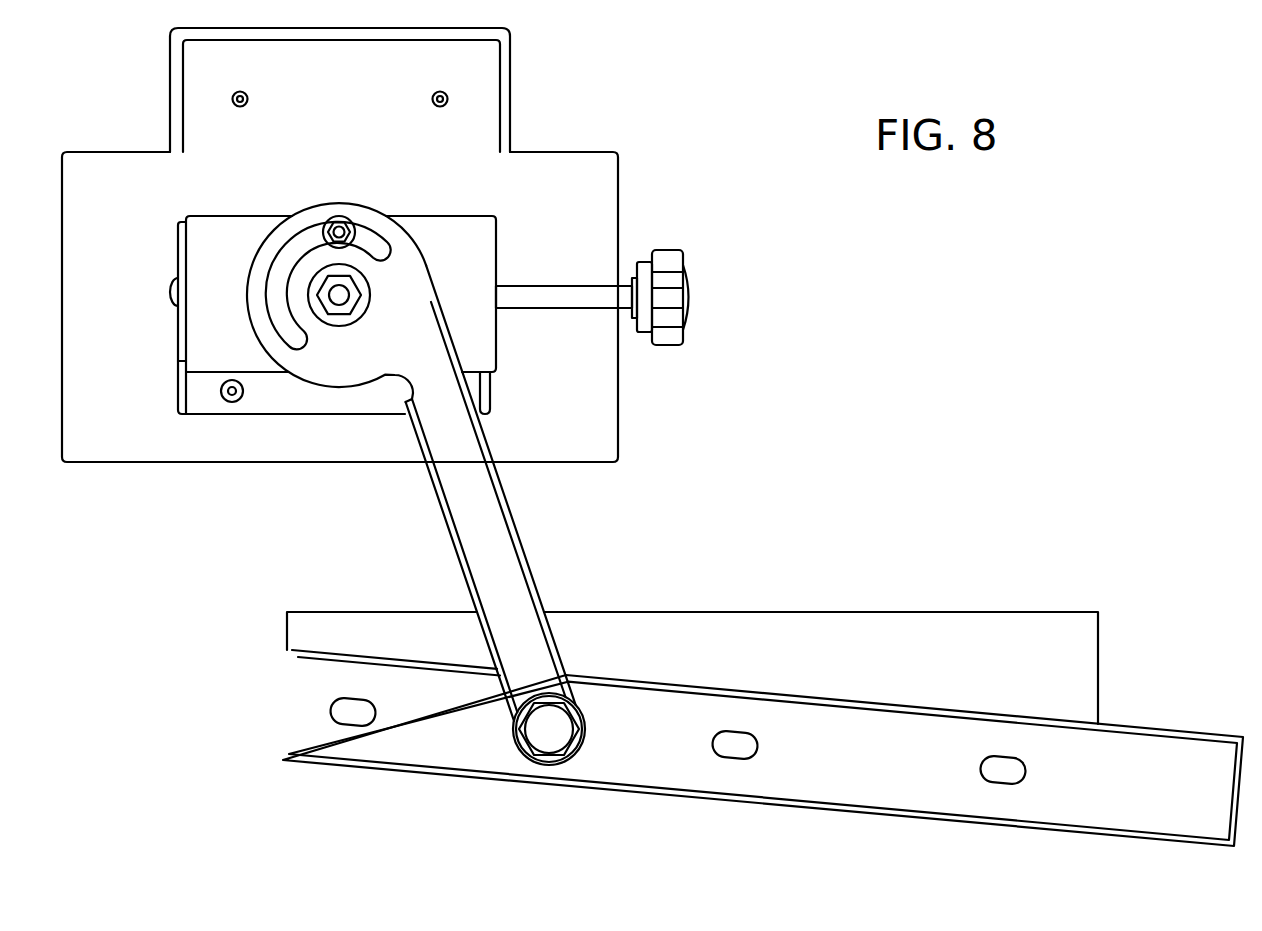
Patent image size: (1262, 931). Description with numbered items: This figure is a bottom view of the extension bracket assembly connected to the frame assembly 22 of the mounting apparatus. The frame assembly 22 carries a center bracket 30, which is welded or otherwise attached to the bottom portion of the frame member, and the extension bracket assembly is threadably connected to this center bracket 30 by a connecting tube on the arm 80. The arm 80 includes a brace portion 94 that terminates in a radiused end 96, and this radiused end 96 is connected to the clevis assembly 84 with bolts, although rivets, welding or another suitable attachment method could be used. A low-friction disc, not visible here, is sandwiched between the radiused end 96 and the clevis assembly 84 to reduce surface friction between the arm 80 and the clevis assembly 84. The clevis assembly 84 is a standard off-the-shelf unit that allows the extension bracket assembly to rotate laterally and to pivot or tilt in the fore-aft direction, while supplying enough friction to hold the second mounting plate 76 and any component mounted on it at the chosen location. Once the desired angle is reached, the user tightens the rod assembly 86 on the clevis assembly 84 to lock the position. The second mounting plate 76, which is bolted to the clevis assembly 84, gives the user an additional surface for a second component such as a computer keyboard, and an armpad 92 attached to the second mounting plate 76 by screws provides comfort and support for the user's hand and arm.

The frame assembly 22 is at (918, 635).
The center bracket 30 is at (438, 727).
The second mounting plate 76 is at (600, 405).
The arm 80 is at (562, 565).
The clevis assembly 84 is at (483, 237).
The rod assembly 86 is at (685, 262).
The armpad 92 is at (507, 97).
The brace portion 94 is at (510, 505).
The radiused end 96 is at (342, 369).